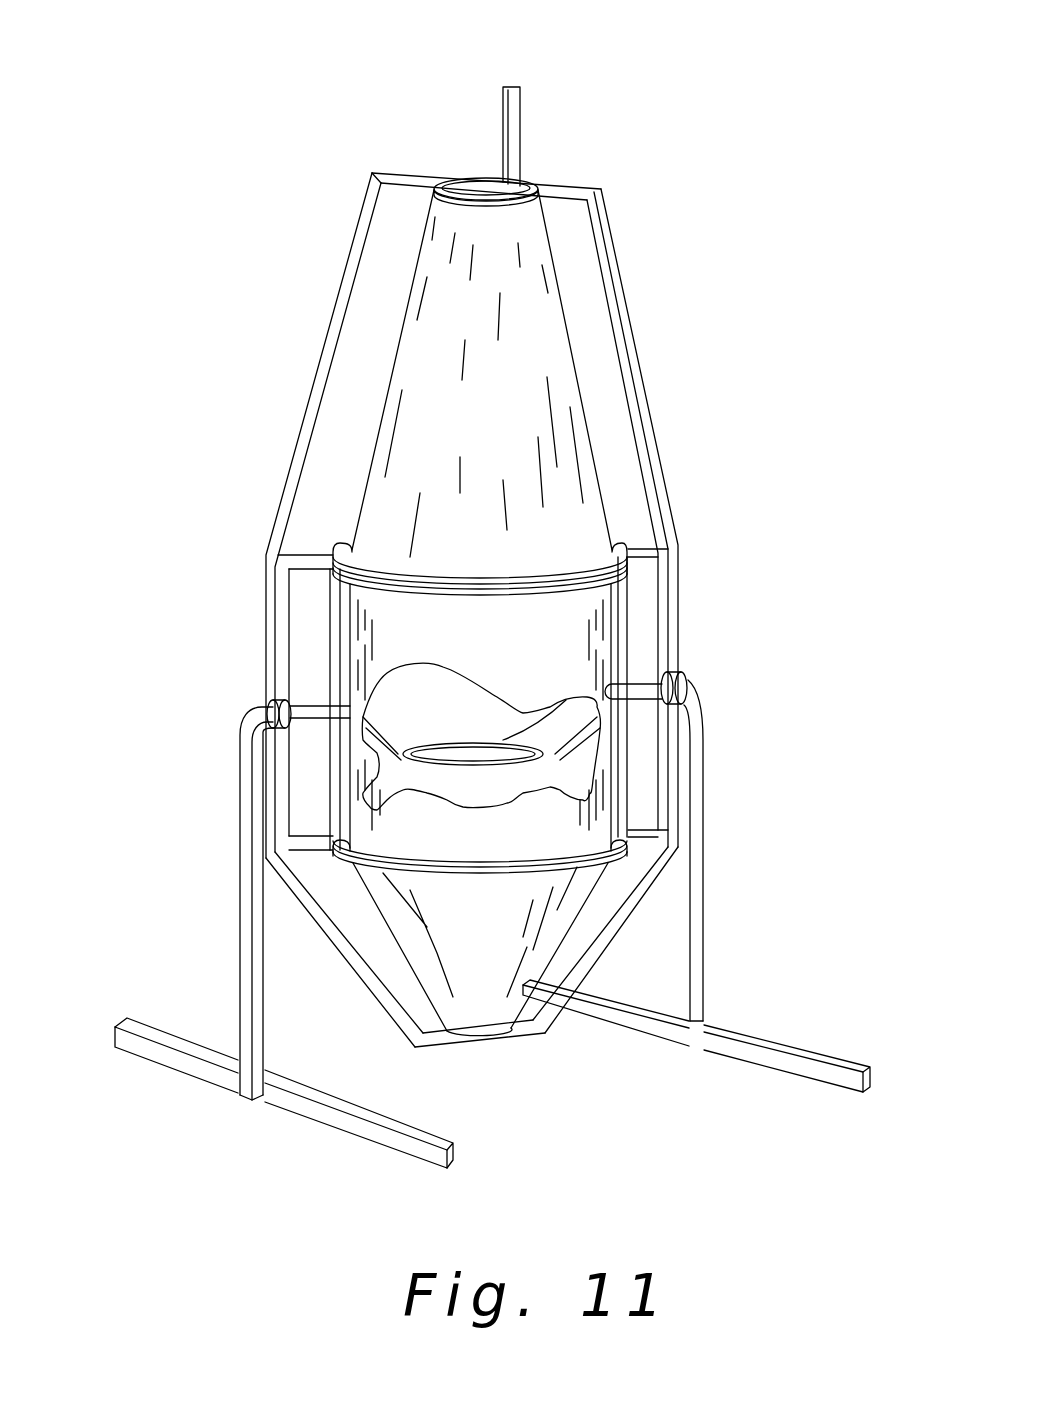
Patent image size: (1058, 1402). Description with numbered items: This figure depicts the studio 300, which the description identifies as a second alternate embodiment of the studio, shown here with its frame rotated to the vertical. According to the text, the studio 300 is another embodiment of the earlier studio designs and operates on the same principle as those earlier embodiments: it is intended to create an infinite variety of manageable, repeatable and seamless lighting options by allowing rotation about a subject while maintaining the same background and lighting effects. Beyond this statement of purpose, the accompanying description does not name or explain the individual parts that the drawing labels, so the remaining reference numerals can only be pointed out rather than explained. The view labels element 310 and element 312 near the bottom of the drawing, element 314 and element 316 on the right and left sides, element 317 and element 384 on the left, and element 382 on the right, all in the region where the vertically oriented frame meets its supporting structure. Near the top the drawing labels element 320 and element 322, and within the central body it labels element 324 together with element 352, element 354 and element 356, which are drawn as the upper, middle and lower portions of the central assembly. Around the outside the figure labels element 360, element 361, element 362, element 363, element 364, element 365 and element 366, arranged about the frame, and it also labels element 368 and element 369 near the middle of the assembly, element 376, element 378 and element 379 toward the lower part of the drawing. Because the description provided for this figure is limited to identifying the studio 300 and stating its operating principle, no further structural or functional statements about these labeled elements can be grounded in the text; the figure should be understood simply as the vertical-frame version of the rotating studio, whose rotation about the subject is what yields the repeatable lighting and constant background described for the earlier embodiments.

The studio 300 is at (704, 148).
The left foot 310 is at (342, 1122).
The right foot 312 is at (765, 1055).
The right upright 314 is at (696, 786).
The left upright 316 is at (247, 781).
The pivot pin 317 is at (290, 767).
The top opening ring 320 is at (483, 185).
The shaft 322 is at (506, 140).
The sample 324 is at (580, 788).
The upper conical portion 352 is at (525, 426).
The cylindrical portion 354 is at (555, 666).
The lower conical portion 356 is at (518, 946).
The frame 360 is at (628, 380).
The top frame member 361 is at (563, 197).
The left frame strut 362 is at (408, 176).
The right upper cross bar 363 is at (642, 557).
The left upper cross bar 364 is at (308, 555).
The right lower cross bar 365 is at (643, 840).
The left lower cross bar 366 is at (312, 852).
The upper flange 368 is at (598, 602).
The lower flange edge 369 is at (437, 872).
The right lower strut 376 is at (600, 937).
The lower flange 378 is at (312, 853).
The bottom support bar 379 is at (447, 1040).
The right pivot collar 382 is at (677, 682).
The left pivot collar 384 is at (280, 694).